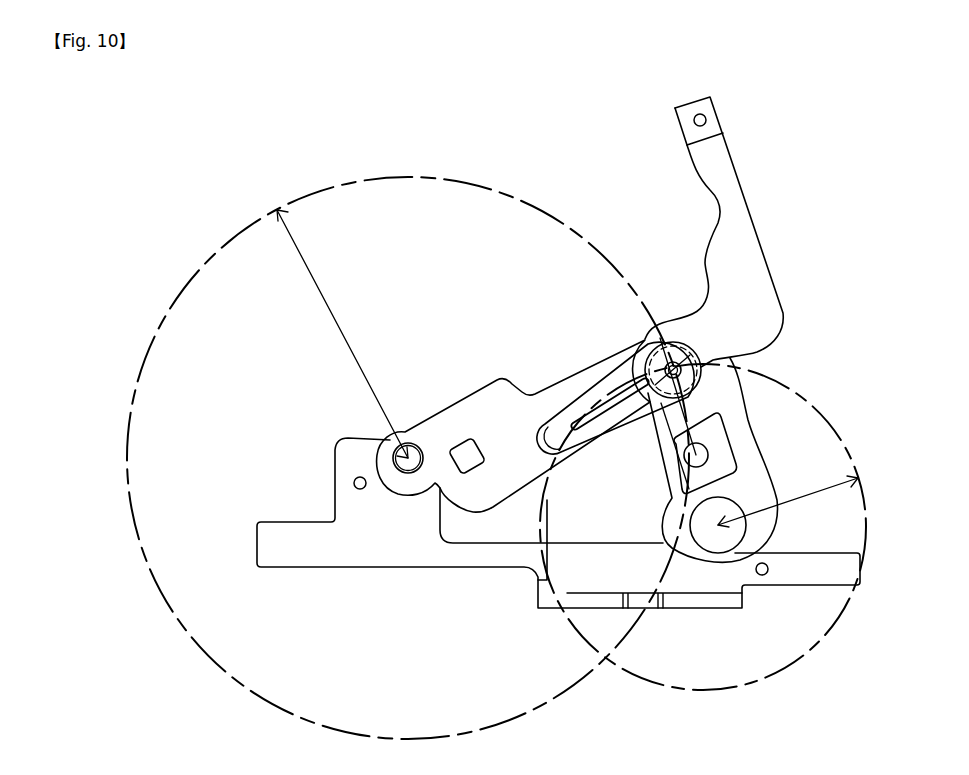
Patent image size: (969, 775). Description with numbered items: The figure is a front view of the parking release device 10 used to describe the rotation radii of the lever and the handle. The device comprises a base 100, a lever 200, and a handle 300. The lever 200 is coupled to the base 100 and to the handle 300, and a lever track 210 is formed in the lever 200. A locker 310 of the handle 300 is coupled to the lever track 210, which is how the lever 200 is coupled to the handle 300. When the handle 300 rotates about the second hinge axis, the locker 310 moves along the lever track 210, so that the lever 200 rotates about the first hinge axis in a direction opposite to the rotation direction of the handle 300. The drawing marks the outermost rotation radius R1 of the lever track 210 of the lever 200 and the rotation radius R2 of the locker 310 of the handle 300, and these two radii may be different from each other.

The parking release device 10 is at (233, 197).
The base 100 is at (393, 555).
The lever 200 is at (480, 407).
The lever track 210 is at (620, 377).
The handle 300 is at (753, 260).
The locker 310 is at (720, 368).
The outermost rotation radius of the lever track R1 is at (342, 334).
The rotation radius of the locker R2 is at (788, 503).